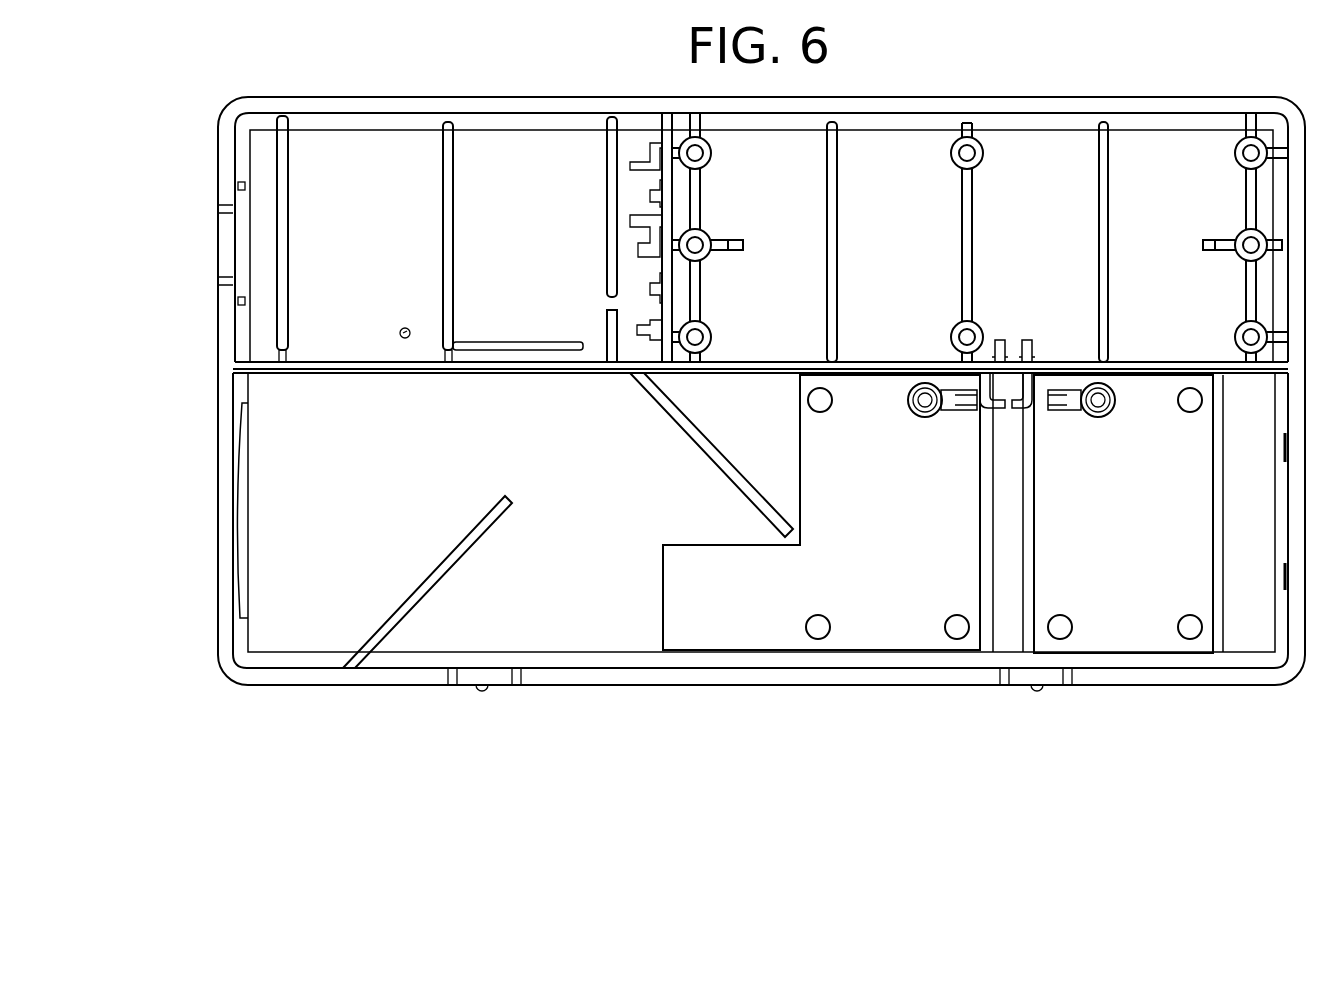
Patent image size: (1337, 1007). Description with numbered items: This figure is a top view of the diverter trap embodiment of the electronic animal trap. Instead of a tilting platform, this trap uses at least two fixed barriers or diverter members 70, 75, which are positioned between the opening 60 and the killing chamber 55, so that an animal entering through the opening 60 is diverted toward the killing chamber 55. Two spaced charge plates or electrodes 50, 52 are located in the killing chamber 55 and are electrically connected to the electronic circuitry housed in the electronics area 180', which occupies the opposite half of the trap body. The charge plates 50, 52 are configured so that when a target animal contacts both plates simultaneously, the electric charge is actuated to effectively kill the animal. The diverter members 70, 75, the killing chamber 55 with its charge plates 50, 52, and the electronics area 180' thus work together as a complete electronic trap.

The opening 60 is at (205, 529).
The diverter member 70 is at (414, 580).
The diverter member 75 is at (652, 449).
The charge plate 50 is at (893, 562).
The charge plate 52 is at (1143, 537).
The killing chamber 55 is at (1009, 628).
The electronics area 180' is at (1059, 242).